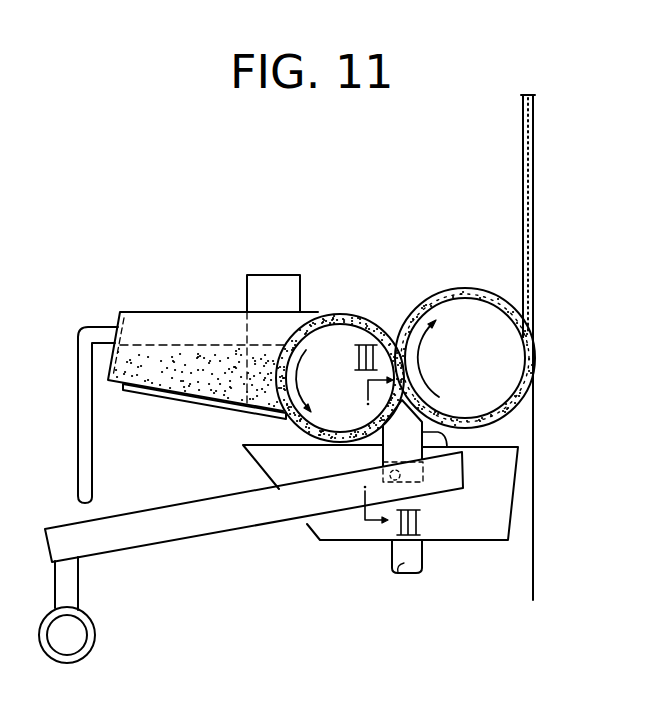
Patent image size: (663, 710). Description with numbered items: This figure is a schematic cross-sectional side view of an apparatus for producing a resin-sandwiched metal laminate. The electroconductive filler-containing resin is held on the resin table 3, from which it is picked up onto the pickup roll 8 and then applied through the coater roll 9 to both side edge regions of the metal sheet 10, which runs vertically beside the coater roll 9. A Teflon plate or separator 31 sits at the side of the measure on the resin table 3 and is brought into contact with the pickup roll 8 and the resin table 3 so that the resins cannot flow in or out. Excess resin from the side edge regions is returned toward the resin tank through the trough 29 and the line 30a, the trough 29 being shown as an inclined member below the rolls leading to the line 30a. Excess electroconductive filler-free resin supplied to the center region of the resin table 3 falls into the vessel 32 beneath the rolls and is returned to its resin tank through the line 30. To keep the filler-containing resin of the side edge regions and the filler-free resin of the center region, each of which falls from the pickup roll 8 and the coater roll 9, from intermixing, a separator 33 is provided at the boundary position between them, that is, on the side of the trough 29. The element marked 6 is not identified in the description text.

The resin table 3 is at (158, 398).
The toner hopper 6 is at (180, 330).
The pickup roll 8 is at (345, 335).
The coater roll 9 is at (455, 315).
The metal sheet 10 is at (533, 457).
The trough 29 is at (173, 527).
The line 30 is at (393, 552).
The line 30a is at (90, 648).
The Teflon plate (separator) 31 is at (272, 274).
The vessel 32 is at (338, 527).
The separator 33 is at (447, 447).